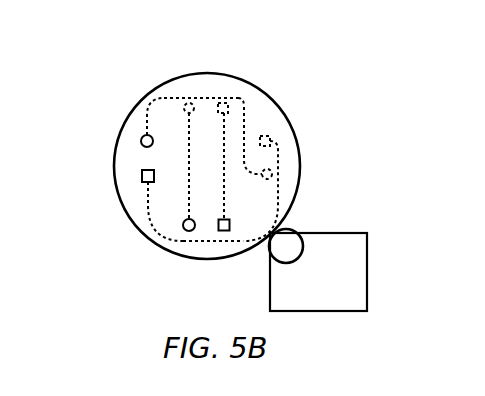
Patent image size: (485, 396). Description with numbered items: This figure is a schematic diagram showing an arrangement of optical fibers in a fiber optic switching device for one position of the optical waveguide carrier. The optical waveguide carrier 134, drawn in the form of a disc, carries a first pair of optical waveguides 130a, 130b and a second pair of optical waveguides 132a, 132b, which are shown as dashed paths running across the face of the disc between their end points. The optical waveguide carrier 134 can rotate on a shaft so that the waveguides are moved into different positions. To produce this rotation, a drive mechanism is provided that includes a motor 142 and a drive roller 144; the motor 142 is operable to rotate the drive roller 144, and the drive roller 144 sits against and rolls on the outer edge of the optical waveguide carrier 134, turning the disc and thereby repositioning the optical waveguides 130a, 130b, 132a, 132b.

The optical waveguide 130a is at (187, 157).
The optical waveguide 130b is at (224, 127).
The optical waveguide 132a is at (182, 96).
The optical waveguide 132b is at (203, 242).
The optical waveguide carrier 134 is at (229, 76).
The motor 142 is at (338, 306).
The drive roller 144 is at (293, 230).